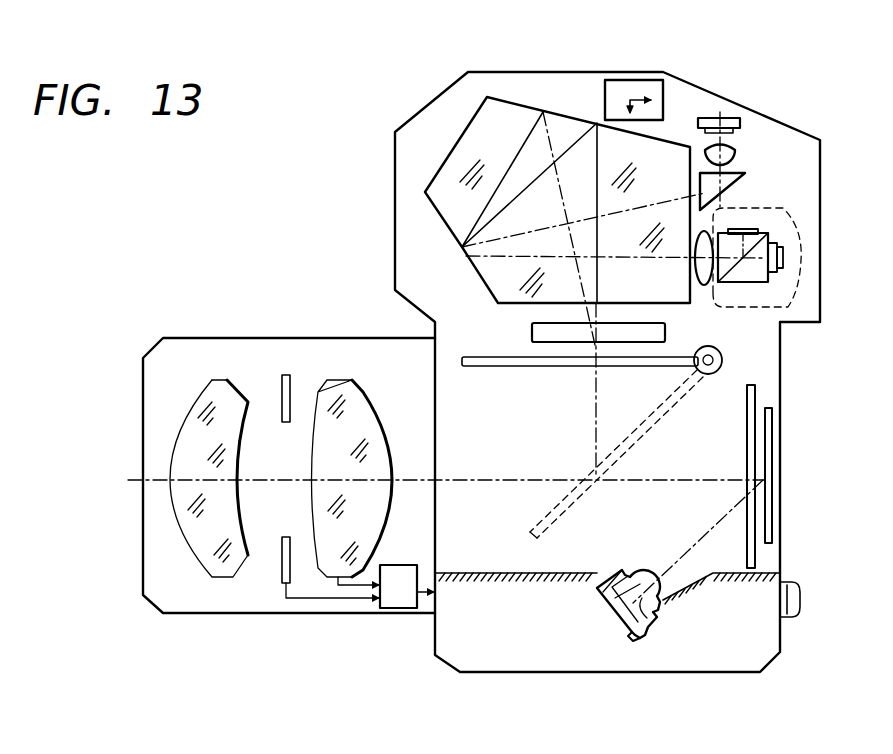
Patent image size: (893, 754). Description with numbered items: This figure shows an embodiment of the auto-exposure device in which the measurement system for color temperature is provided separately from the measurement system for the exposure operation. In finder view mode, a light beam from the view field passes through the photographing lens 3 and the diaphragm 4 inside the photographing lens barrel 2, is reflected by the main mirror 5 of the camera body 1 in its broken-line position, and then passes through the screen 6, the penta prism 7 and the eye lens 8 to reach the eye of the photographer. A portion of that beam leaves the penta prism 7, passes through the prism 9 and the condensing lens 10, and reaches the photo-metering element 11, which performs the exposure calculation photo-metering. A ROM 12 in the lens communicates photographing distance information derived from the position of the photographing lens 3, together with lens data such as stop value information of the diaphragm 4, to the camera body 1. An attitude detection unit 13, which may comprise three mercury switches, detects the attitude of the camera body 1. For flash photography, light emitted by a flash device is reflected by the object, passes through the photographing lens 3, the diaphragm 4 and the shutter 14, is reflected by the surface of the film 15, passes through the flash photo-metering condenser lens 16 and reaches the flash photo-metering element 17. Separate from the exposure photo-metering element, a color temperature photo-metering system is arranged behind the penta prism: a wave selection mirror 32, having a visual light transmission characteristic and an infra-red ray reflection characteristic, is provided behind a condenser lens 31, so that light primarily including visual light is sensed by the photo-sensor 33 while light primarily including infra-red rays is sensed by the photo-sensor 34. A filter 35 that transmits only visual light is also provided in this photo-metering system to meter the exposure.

The camera body 1 is at (498, 662).
The photographing lens barrel 2 is at (188, 605).
The photographing lens 3 is at (340, 386).
The diaphragm 4 is at (284, 568).
The main mirror 5 is at (628, 433).
The screen 6 is at (532, 333).
The penta prism 7 is at (500, 110).
The eye lens 8 is at (790, 230).
The prism 9 is at (743, 185).
The condensing lens 10 is at (737, 157).
The photo-metering element 11 is at (722, 122).
The ROM 12 is at (393, 605).
The attitude detection unit 13 is at (620, 85).
The shutter 14 is at (753, 394).
The film 15 is at (772, 540).
The flash photo-metering condenser lens 16 is at (650, 622).
The flash photo-metering element 17 is at (635, 634).
The condenser lens 31 is at (703, 286).
The wave selection mirror 32 is at (728, 282).
The photo-sensor 33 is at (783, 268).
The photo-sensor 34 is at (752, 229).
The filter 35 is at (770, 270).